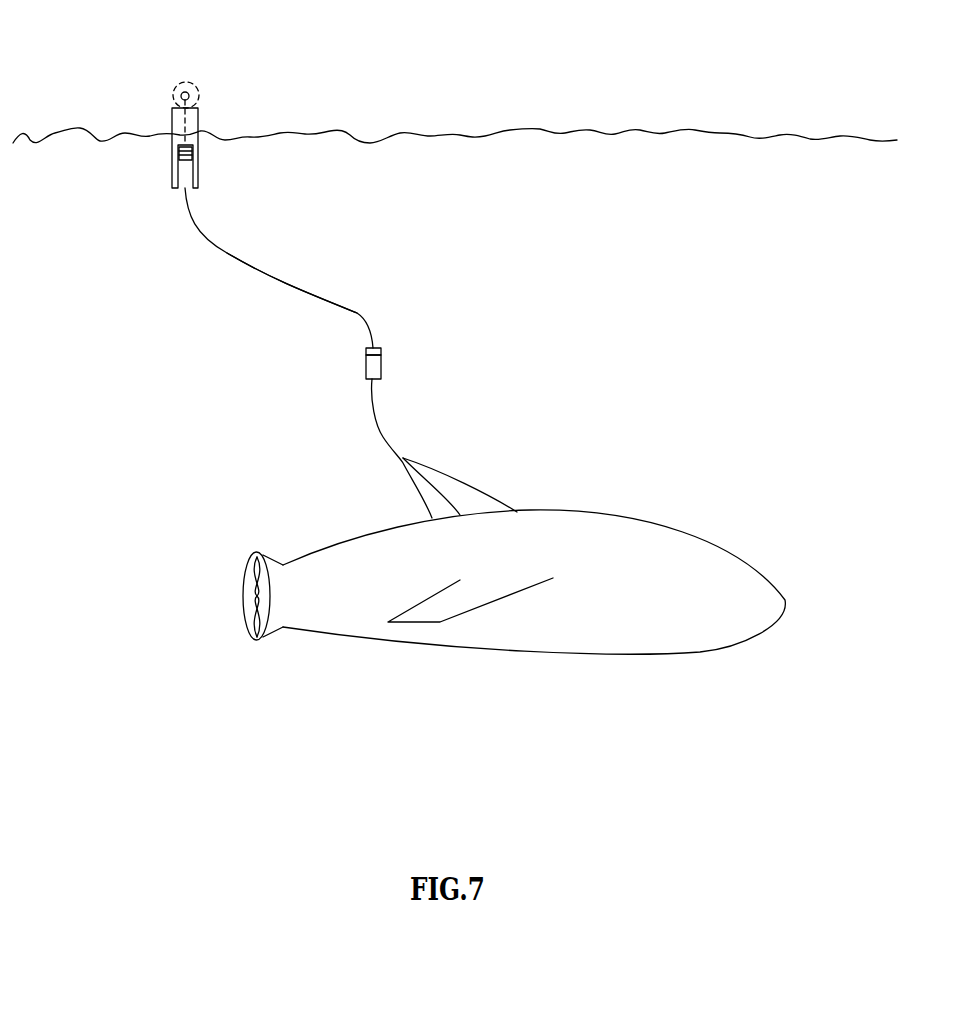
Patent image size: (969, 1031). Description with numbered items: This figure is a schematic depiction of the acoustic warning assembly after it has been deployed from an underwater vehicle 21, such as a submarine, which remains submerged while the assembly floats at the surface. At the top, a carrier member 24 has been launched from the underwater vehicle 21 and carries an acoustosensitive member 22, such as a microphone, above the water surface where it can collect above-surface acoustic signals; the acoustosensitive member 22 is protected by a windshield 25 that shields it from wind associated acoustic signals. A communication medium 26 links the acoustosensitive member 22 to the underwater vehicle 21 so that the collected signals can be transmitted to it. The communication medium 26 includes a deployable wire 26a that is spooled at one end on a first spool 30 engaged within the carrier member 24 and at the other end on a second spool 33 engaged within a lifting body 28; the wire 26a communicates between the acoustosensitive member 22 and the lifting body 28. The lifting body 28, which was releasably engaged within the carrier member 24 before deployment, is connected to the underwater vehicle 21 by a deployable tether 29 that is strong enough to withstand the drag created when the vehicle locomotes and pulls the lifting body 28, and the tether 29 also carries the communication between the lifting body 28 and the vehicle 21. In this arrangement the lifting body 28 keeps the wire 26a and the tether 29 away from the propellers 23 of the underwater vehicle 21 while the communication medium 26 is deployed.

The underwater vehicle 21 is at (550, 638).
The acoustosensitive member 22 is at (190, 95).
The propellers 23 is at (250, 610).
The carrier member 24 is at (200, 122).
The windshield 25 is at (172, 98).
The communication medium 26 is at (227, 253).
The deployable wire 26a is at (298, 285).
The lifting body 28 is at (381, 363).
The deployable tether 29 is at (393, 448).
The first spool 30 is at (180, 153).
The second spool 33 is at (380, 348).